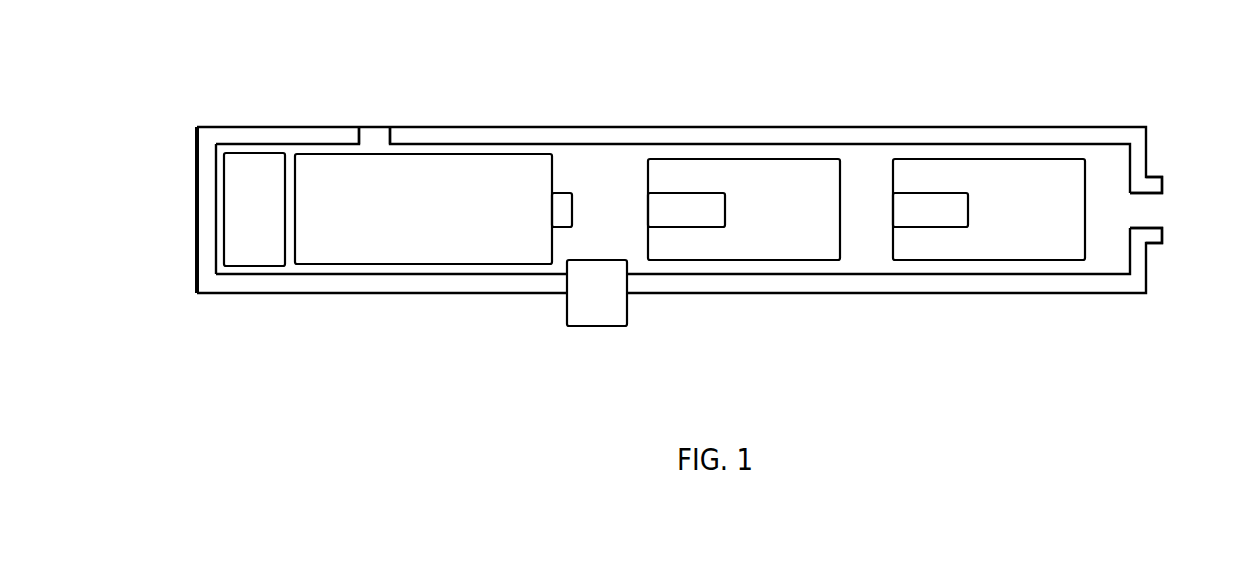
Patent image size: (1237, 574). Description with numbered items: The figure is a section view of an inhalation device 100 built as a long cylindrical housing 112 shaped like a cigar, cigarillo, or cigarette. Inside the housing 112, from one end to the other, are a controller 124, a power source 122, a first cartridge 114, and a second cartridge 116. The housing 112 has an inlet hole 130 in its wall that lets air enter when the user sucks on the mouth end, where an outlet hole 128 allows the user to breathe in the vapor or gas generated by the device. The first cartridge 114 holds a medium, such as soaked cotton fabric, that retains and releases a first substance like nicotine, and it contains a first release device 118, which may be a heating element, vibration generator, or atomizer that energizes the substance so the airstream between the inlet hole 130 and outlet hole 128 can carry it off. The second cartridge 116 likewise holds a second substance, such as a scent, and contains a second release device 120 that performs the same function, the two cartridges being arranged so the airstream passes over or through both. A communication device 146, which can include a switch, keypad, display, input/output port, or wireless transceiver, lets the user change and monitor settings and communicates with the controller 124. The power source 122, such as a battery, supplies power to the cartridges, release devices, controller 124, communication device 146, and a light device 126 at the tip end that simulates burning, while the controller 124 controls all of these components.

The inhalation device 100 is at (316, 56).
The housing 112 is at (650, 127).
The first cartridge 114 is at (775, 260).
The second cartridge 116 is at (1008, 260).
The first release device 118 is at (685, 228).
The second release device 120 is at (917, 228).
The power source 122 is at (327, 258).
The controller 124 is at (252, 153).
The light device 126 is at (195, 128).
The outlet hole 128 is at (1148, 212).
The inlet hole 130 is at (382, 133).
The communication device 146 is at (583, 326).